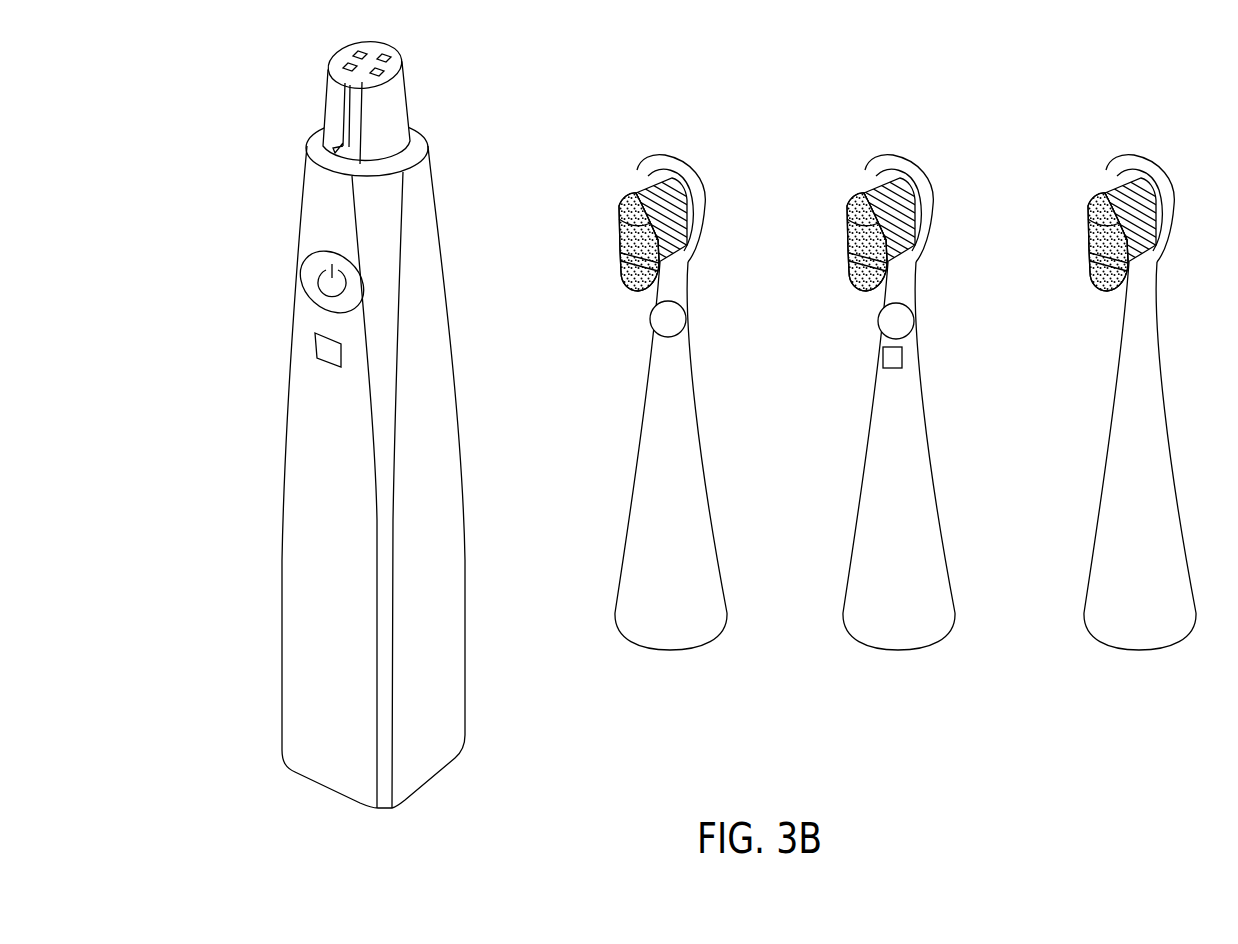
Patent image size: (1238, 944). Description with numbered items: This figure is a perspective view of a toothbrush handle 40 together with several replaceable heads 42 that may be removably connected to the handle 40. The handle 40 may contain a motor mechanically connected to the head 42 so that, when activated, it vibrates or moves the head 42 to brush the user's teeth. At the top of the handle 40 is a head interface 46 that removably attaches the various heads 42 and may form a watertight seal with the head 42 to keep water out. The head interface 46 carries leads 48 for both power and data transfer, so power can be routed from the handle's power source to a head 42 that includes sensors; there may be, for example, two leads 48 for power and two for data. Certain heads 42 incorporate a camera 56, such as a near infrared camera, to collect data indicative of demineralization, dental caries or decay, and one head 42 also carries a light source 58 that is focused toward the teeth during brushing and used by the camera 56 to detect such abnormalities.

The handle 40 is at (389, 422).
The head 42 is at (878, 399).
The head interface 46 is at (330, 64).
The leads 48 is at (401, 63).
The camera 56 is at (650, 317).
The light source 58 is at (903, 355).